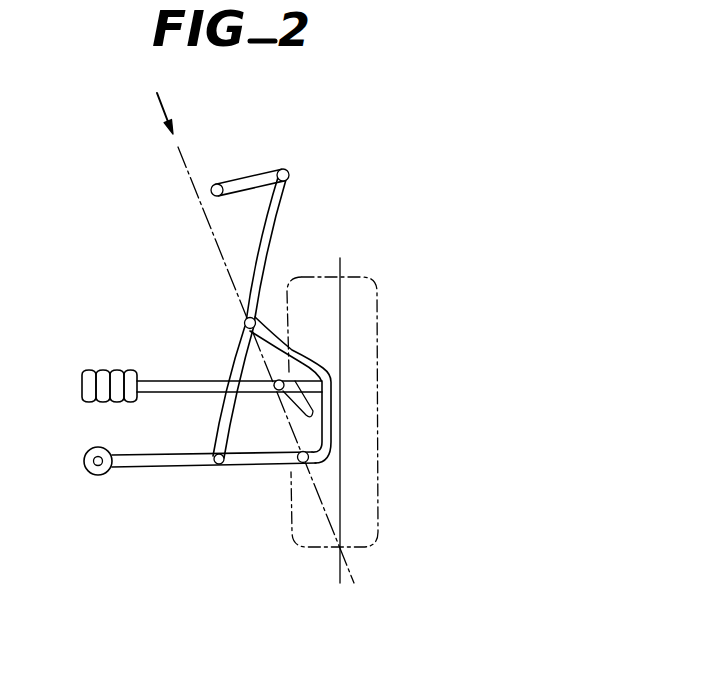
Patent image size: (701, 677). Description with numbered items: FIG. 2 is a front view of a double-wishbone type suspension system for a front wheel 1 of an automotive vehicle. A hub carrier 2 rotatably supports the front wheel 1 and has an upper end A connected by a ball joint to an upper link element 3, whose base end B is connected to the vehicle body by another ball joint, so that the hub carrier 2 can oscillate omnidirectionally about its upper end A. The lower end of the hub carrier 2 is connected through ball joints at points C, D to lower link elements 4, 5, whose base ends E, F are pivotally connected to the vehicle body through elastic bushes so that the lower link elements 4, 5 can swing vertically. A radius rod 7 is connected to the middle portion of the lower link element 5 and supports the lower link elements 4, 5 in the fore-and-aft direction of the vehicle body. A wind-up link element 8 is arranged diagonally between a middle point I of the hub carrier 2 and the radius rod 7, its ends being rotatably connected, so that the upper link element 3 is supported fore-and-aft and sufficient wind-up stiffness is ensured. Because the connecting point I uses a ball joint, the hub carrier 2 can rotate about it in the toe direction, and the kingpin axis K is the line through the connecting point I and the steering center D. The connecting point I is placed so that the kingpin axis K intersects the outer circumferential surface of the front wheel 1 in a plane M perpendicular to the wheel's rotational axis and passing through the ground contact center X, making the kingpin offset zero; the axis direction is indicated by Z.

The front wheel 1 is at (377, 306).
The hub carrier 2 is at (282, 207).
The upper link element 3 is at (247, 177).
The lower link element 4 is at (152, 381).
The lower link element 5 is at (167, 455).
The radius rod 7 is at (214, 464).
The wind-up link element 8 is at (228, 366).
The upper end of hub carrier A is at (289, 170).
The base end of upper link element B is at (214, 184).
The connecting point C is at (284, 385).
The steering center D is at (335, 443).
The base end of lower link element 4 E is at (78, 372).
The base end of lower link element 5 F is at (86, 452).
The connecting point I is at (245, 319).
The kingpin axis K is at (313, 487).
The plane M is at (340, 337).
The ground contact center X is at (348, 551).
The steering axis direction Z is at (160, 119).